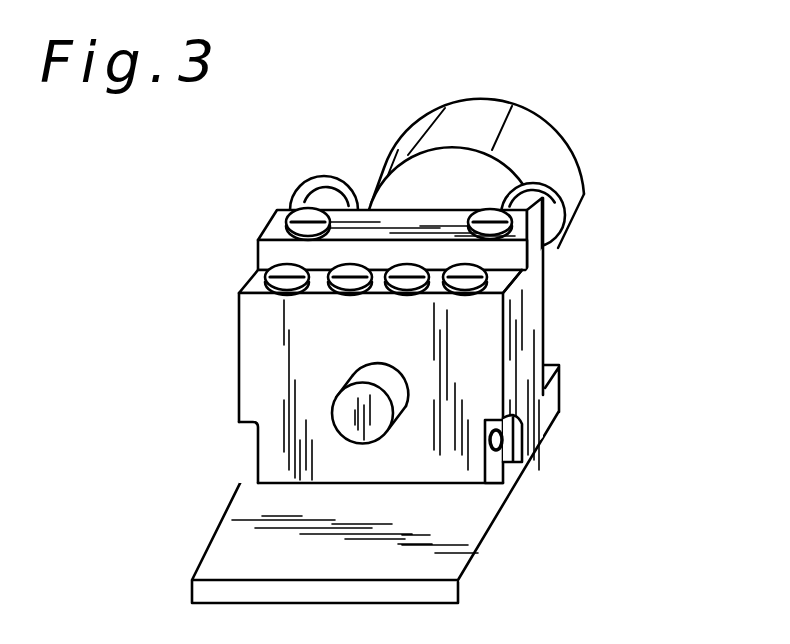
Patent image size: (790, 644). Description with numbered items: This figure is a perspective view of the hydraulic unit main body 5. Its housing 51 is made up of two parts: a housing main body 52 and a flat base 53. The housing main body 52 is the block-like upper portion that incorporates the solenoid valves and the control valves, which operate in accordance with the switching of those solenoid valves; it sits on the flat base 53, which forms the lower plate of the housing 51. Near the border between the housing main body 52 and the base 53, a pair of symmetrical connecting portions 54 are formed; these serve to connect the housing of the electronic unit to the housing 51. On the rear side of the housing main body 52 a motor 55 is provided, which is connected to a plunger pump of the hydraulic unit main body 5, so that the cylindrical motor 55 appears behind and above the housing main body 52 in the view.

The hydraulic unit main body 5 is at (381, 138).
The housing 51 is at (659, 326).
The housing main body 52 is at (537, 352).
The flat base 53 is at (523, 472).
The connecting portions 54 is at (258, 447).
The motor 55 is at (548, 152).